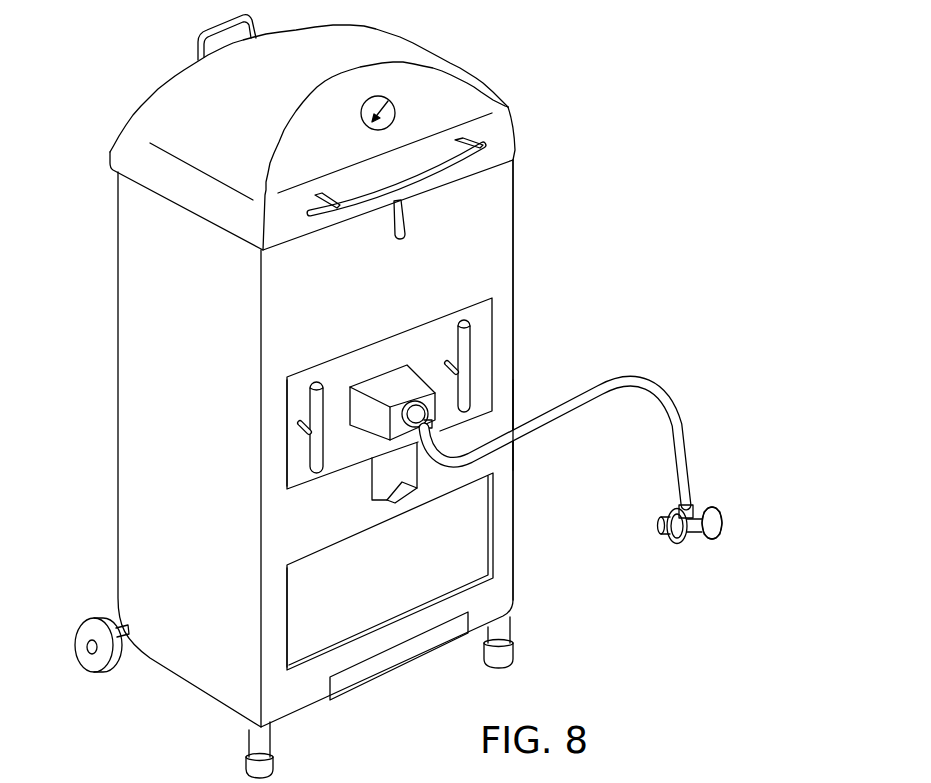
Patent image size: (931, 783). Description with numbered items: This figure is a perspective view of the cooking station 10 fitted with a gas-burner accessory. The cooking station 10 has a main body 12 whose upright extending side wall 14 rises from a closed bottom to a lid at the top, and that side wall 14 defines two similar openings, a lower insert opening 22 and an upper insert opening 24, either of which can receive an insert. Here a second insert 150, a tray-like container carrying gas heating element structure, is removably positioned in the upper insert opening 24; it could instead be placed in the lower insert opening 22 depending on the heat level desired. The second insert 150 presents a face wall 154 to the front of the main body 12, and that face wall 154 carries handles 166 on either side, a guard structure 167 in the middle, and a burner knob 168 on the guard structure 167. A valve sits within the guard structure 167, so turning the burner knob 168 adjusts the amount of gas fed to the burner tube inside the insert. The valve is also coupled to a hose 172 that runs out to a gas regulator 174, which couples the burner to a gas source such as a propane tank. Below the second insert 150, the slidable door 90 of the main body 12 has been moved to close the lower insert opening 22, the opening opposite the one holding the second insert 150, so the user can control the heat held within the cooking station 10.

The cooking station 10 is at (111, 82).
The main body 12 is at (518, 226).
The upright extending side wall 14 is at (514, 253).
The lower insert opening 22 is at (286, 594).
The upper insert opening 24 is at (286, 412).
The slidable door 90 is at (457, 552).
The second insert 150 is at (494, 333).
The face wall 154 is at (483, 321).
The handles 166 is at (312, 453).
The guard structure 167 is at (382, 385).
The burner knob 168 is at (432, 426).
The hose 172 is at (582, 398).
The gas regulator 174 is at (697, 555).